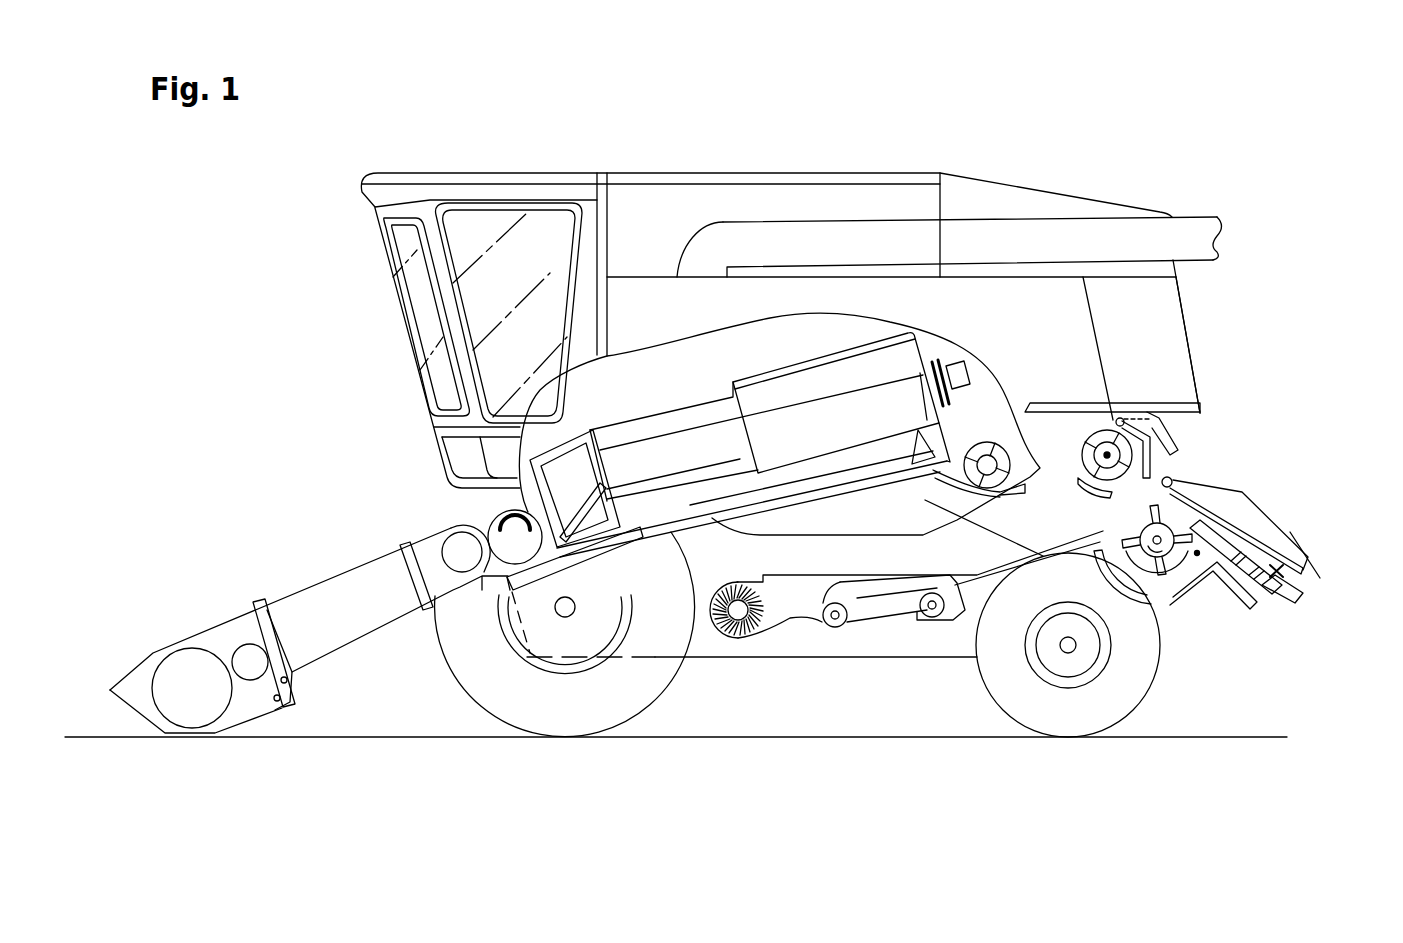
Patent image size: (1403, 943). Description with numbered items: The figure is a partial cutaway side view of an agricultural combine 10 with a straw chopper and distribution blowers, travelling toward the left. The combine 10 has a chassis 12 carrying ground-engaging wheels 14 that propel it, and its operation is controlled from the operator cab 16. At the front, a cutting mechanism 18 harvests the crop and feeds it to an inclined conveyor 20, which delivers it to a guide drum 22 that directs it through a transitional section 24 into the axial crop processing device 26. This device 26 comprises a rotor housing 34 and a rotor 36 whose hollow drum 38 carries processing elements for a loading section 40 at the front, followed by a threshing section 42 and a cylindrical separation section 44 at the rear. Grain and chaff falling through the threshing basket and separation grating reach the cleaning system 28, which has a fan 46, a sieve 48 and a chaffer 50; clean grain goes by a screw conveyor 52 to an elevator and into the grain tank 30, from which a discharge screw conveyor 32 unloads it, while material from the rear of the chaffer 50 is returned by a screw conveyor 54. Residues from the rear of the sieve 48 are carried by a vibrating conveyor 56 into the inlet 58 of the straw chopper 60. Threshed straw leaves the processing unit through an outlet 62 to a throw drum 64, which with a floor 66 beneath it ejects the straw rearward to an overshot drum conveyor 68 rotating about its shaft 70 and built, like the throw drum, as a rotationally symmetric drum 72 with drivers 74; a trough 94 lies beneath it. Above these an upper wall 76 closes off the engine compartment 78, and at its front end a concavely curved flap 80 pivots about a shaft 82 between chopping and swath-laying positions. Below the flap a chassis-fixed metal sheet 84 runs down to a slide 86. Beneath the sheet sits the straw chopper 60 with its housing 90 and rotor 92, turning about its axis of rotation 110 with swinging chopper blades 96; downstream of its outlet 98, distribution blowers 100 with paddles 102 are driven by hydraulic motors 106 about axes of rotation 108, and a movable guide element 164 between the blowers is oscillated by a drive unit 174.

The agricultural combine 10 is at (1010, 115).
The chassis 12 is at (786, 567).
The wheels 14 is at (578, 708).
The operator cab 16 is at (488, 222).
The cutting mechanism 18 is at (223, 630).
The inclined conveyor 20 is at (314, 592).
The guide drum 22 is at (480, 516).
The transitional section 24 is at (570, 509).
The axial crop processing device 26 is at (815, 503).
The cleaning system 28 is at (863, 632).
The grain tank 30 is at (630, 253).
The discharge screw conveyor 32 is at (1035, 253).
The rotor housing 34 is at (693, 518).
The rotor 36 is at (618, 556).
The hollow drum 38 is at (885, 380).
The loading section 40 is at (558, 403).
The threshing section 42 is at (642, 382).
The separation section 44 is at (805, 352).
The fan 46 is at (750, 633).
The sieve 48 is at (818, 616).
The chaffer 50 is at (882, 600).
The screw conveyor 52 is at (828, 627).
The screw conveyor 54 is at (936, 618).
The vibrating conveyor 56 is at (1025, 560).
The inlet 58 is at (1113, 545).
The straw chopper 60 is at (1196, 602).
The outlet 62 is at (992, 440).
The throw drum 64 is at (995, 392).
The floor 66 is at (985, 490).
The overshot drum conveyor 68 is at (1095, 415).
The shaft 70 is at (1077, 486).
The rotationally symmetric drum 72 is at (1093, 462).
The drivers 74 is at (1070, 406).
The upper wall 76 is at (1183, 377).
The engine compartment 78 is at (1145, 305).
The flap 80 is at (1172, 463).
The shaft 82 is at (1133, 413).
The metal sheet 84 is at (1180, 480).
The slide 86 is at (1247, 500).
The straw chopper housing 90 is at (1147, 598).
The rotor 92 is at (1173, 590).
The trough 94 is at (1066, 487).
The chopper blades 96 is at (1140, 533).
The outlet 98 is at (1263, 593).
The distribution blowers 100 is at (1261, 610).
The paddles 102 is at (1273, 593).
The hydraulic motor 106 is at (1277, 572).
The axis of rotation 108 is at (1263, 547).
The axis of rotation 110 is at (1197, 556).
The movable guide element 164 is at (1277, 582).
The drive unit 174 is at (1293, 562).